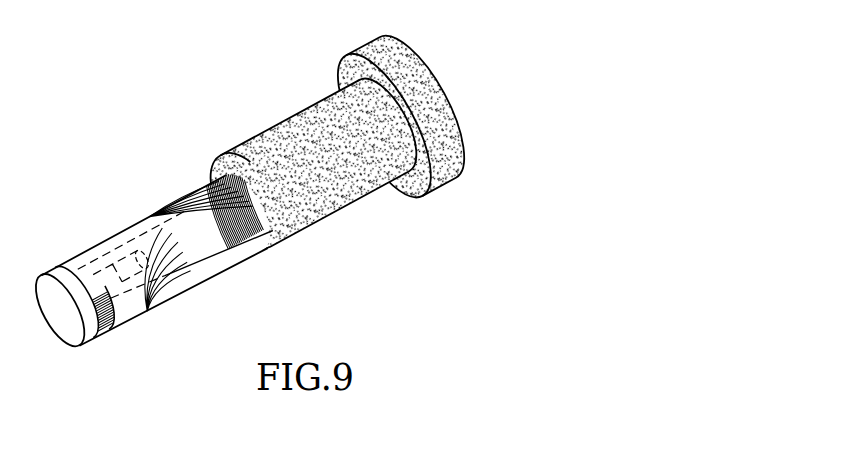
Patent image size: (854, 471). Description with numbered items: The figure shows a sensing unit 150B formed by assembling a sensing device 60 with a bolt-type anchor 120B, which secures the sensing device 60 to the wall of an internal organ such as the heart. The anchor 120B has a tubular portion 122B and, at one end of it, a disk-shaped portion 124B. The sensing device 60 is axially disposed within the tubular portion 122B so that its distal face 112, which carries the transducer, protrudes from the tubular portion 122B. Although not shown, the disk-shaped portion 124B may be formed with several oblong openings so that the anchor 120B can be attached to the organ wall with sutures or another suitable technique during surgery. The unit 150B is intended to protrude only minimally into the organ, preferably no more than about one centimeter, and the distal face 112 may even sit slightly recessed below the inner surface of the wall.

The sensing unit 150B is at (152, 146).
The sensing device 60 is at (208, 293).
The distal face 112 is at (62, 320).
The anchor 120B is at (461, 193).
The tubular portion 122B is at (353, 193).
The disk-shaped portion 124B is at (428, 95).